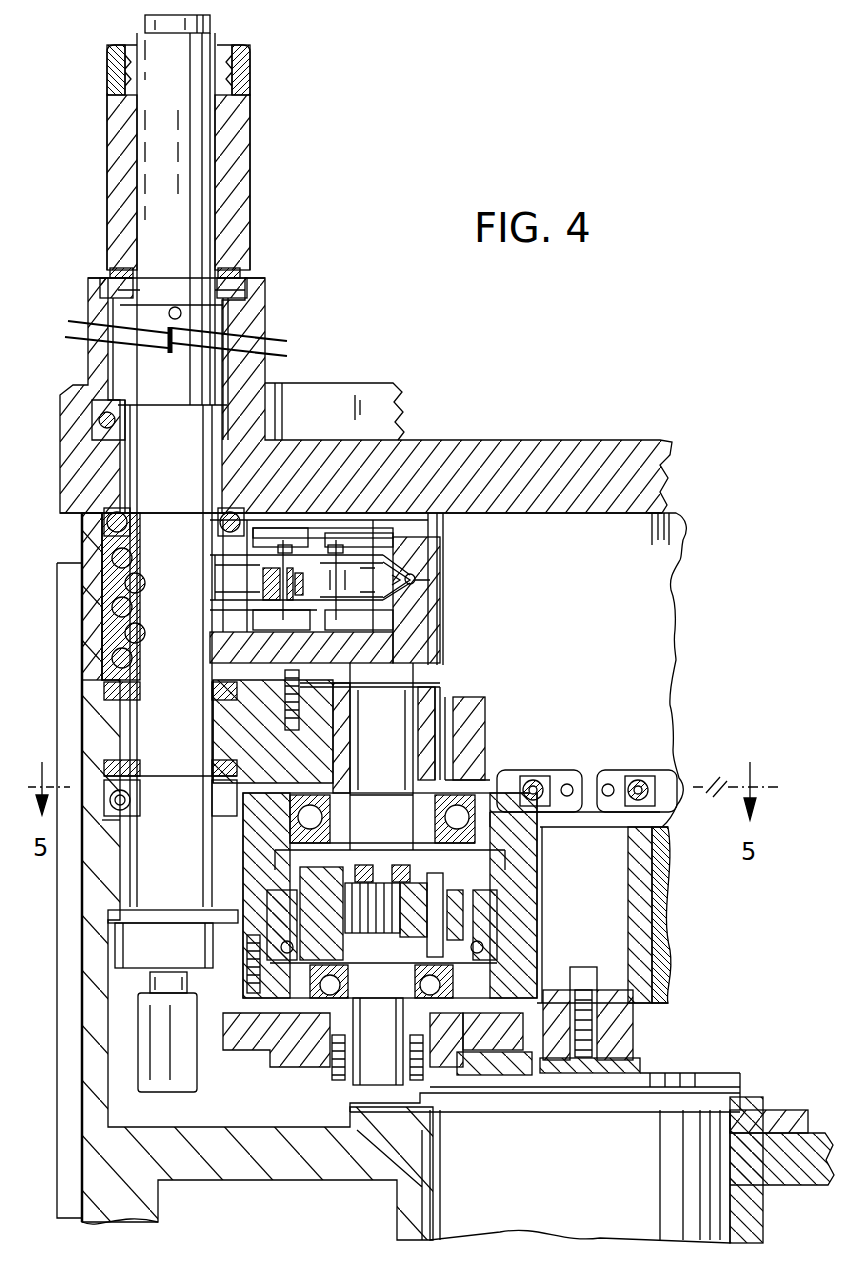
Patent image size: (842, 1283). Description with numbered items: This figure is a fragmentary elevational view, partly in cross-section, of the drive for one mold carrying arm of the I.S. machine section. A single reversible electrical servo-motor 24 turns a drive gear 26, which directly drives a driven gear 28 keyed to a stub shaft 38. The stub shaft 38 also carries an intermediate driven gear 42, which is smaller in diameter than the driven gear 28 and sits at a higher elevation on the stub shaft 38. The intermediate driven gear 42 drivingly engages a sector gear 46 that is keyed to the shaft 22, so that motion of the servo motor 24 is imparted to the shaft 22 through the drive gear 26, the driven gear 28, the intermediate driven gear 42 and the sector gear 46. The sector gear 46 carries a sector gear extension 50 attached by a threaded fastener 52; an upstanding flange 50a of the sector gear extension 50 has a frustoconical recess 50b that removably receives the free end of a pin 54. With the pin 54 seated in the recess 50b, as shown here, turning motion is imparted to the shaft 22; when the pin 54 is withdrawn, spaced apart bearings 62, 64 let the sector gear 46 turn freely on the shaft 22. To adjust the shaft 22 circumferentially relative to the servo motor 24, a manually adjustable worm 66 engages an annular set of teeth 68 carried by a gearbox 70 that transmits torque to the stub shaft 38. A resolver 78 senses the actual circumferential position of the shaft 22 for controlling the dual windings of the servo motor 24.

The shaft 22 is at (220, 215).
The reversible electrical servo-motor 24 is at (572, 1176).
The drive gear 26 is at (640, 1035).
The driven gear 28 is at (265, 1050).
The stub shaft 38 is at (393, 746).
The intermediate driven gear 42 is at (437, 692).
The sector gear 46 is at (480, 717).
The sector gear extension 50 is at (433, 633).
The upstanding flange 50a is at (442, 606).
The frustoconical recess 50b is at (420, 584).
The threaded fastener 52 is at (352, 660).
The pin 54 is at (385, 560).
The bearing 62 is at (104, 766).
The bearing 64 is at (104, 700).
The manually adjustable worm 66 is at (560, 772).
The annular set of teeth 68 is at (515, 783).
The gearbox 70 is at (540, 886).
The resolver 78 is at (178, 1040).